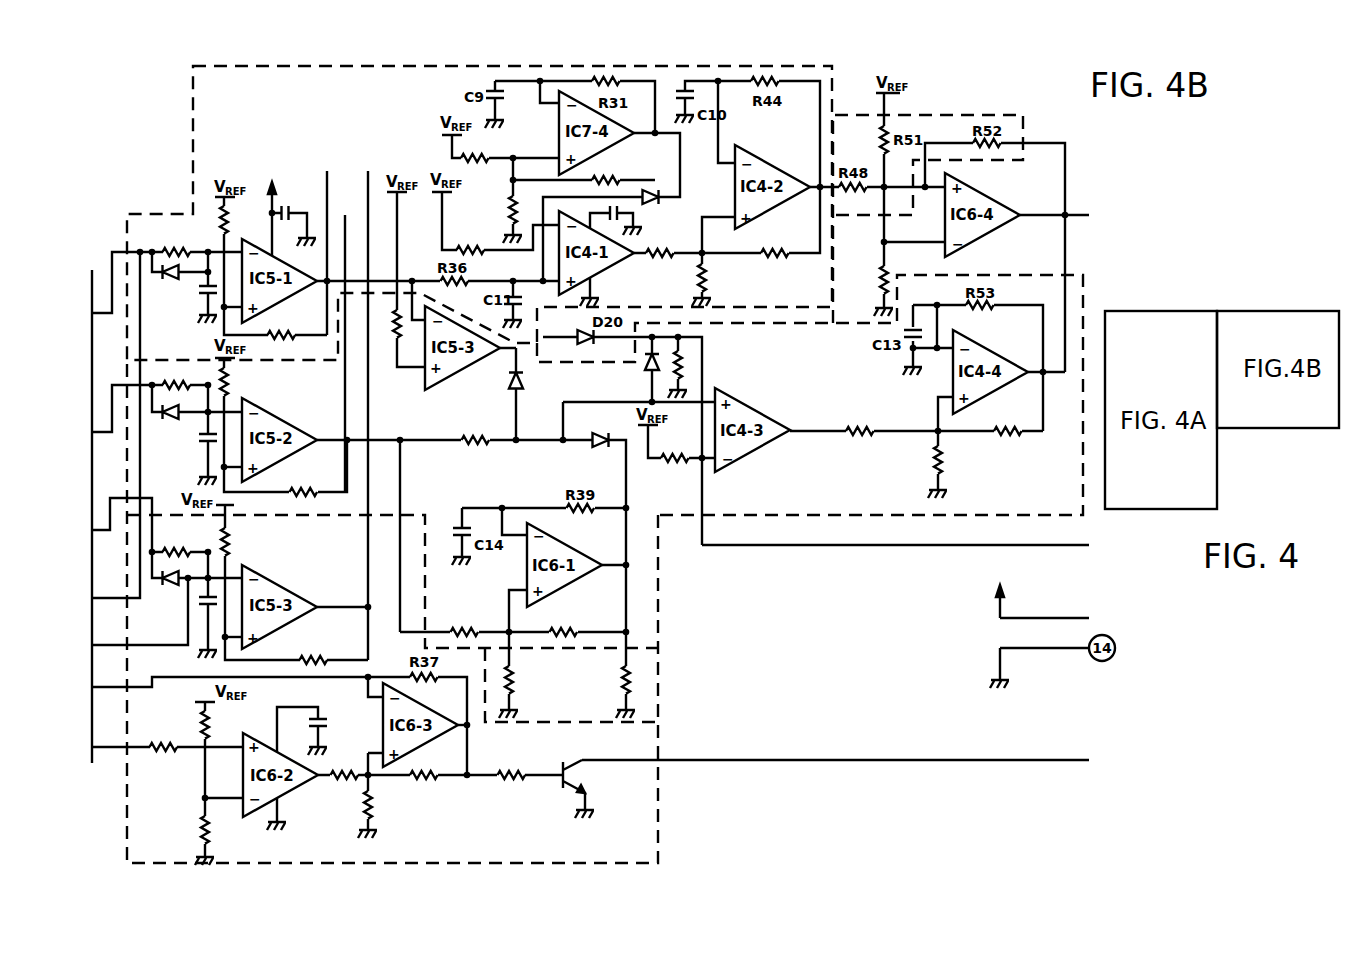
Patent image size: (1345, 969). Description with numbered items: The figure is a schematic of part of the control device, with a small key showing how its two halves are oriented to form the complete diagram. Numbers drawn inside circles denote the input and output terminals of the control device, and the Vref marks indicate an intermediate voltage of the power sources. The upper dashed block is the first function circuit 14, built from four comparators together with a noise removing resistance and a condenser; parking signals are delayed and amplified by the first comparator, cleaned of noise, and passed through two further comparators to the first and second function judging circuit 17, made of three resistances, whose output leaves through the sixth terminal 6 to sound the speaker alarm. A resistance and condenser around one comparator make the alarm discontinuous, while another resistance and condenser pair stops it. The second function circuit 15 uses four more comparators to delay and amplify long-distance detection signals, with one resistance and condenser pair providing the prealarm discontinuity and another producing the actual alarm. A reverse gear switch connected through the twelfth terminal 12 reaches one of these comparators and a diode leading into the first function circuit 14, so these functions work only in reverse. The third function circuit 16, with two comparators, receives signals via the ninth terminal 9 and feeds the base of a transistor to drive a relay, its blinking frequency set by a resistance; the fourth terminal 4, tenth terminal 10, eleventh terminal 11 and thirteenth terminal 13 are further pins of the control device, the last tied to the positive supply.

The first function circuit 14 is at (189, 115).
The second function circuit 15 is at (663, 590).
The third function circuit 16 is at (665, 814).
The first and second function judging circuit 17 is at (973, 108).
The amplifying circuit 4 is at (848, 760).
The wave filtering circuit 6 is at (1067, 215).
The comparing circuit 9 is at (368, 402).
The automatic gain control circuit 10 is at (327, 240).
The detection level controlling circuit 11 is at (345, 340).
The function deciding circuit 12 is at (908, 545).
The reference time generating circuit 13 is at (1051, 599).